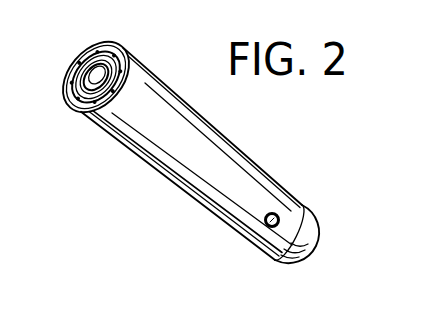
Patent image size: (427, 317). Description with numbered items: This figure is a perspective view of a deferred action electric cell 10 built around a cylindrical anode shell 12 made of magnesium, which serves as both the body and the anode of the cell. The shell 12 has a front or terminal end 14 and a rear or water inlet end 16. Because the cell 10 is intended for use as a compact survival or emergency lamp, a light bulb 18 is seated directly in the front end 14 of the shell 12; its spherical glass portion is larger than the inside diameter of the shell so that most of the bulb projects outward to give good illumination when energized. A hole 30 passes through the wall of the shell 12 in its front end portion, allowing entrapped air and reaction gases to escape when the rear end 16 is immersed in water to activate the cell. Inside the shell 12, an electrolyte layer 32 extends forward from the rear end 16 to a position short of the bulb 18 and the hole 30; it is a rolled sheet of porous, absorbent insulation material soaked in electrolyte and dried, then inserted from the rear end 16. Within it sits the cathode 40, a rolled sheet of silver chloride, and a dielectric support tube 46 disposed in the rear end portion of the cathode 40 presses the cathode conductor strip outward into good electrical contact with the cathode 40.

The deferred action electric cell 10 is at (195, 151).
The cylindrical anode shell 12 is at (205, 212).
The front or terminal end 14 is at (272, 261).
The rear or water inlet end 16 is at (72, 110).
The light bulb 18 is at (322, 235).
The hole 30 is at (278, 214).
The electrolyte layer 32 is at (73, 68).
The cathode 40 is at (90, 58).
The dielectric support tube 46 is at (107, 55).